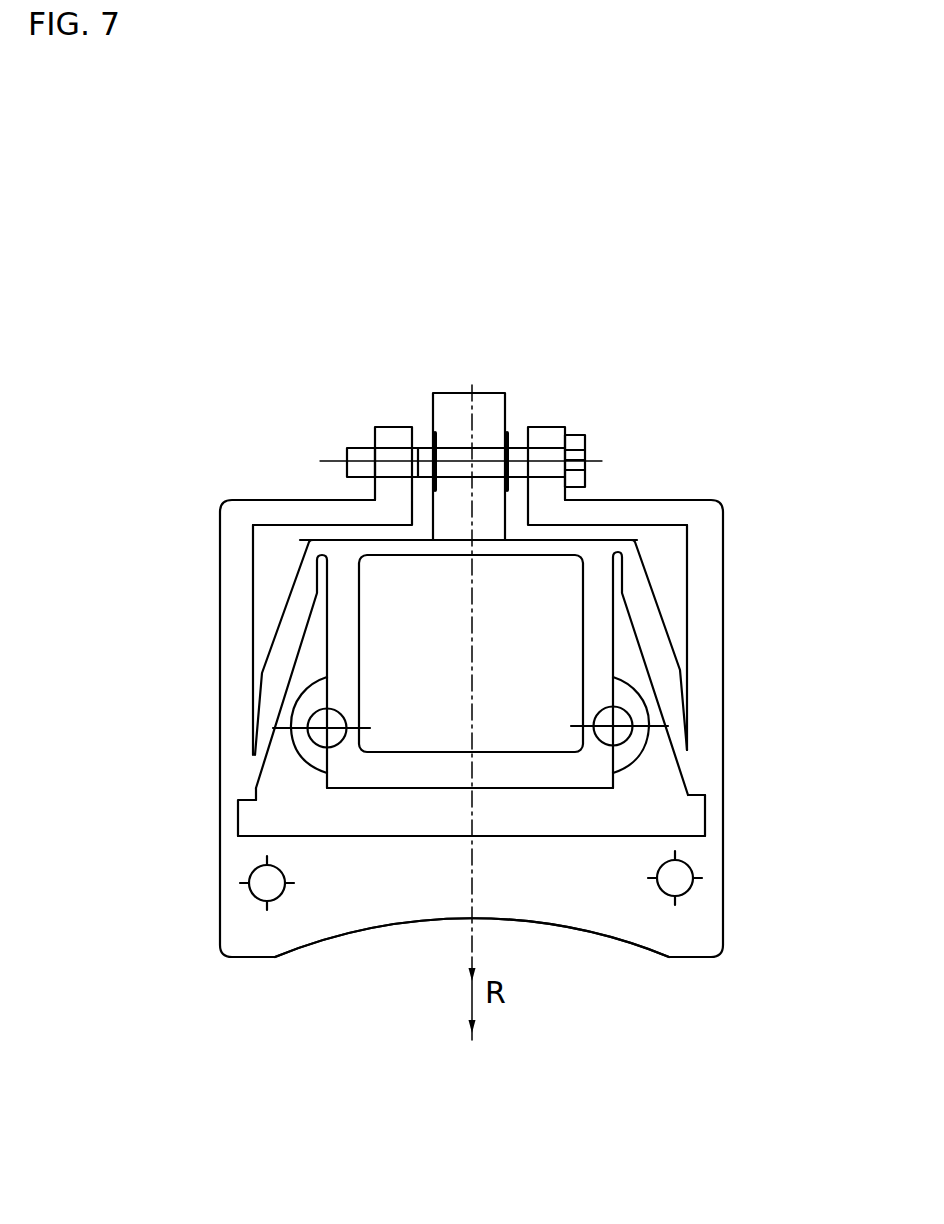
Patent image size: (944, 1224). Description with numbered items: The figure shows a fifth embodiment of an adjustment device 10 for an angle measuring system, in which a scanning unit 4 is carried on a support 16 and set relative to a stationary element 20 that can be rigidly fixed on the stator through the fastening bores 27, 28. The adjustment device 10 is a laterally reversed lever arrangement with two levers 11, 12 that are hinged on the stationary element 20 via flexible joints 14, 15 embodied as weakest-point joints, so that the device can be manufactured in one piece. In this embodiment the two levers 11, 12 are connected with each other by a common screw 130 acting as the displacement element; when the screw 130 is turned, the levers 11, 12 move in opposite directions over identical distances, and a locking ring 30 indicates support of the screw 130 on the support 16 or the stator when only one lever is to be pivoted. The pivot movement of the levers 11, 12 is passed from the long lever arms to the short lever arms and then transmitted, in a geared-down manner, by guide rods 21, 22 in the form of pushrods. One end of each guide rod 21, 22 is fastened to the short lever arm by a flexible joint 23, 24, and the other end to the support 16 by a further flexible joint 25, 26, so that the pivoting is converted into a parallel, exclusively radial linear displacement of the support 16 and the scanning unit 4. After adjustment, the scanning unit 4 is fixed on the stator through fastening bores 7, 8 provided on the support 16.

The scanning unit 4 is at (517, 606).
The fastening bore 7 is at (328, 728).
The fastening bore 8 is at (613, 725).
The adjustment device 10 is at (724, 469).
The lever 11 is at (237, 670).
The lever 12 is at (703, 648).
The flexible joint 14 is at (250, 820).
The flexible joint 15 is at (717, 817).
The support 16 is at (558, 758).
The stationary element 20 is at (703, 920).
The guide rod 21 is at (293, 612).
The guide rod 22 is at (643, 610).
The flexible joint 23 is at (270, 747).
The flexible joint 24 is at (682, 755).
The flexible joint 25 is at (320, 540).
The flexible joint 26 is at (618, 542).
The fastening bore 27 is at (267, 883).
The fastening bore 28 is at (675, 878).
The locking ring 30 is at (430, 438).
The screw 130 is at (585, 438).